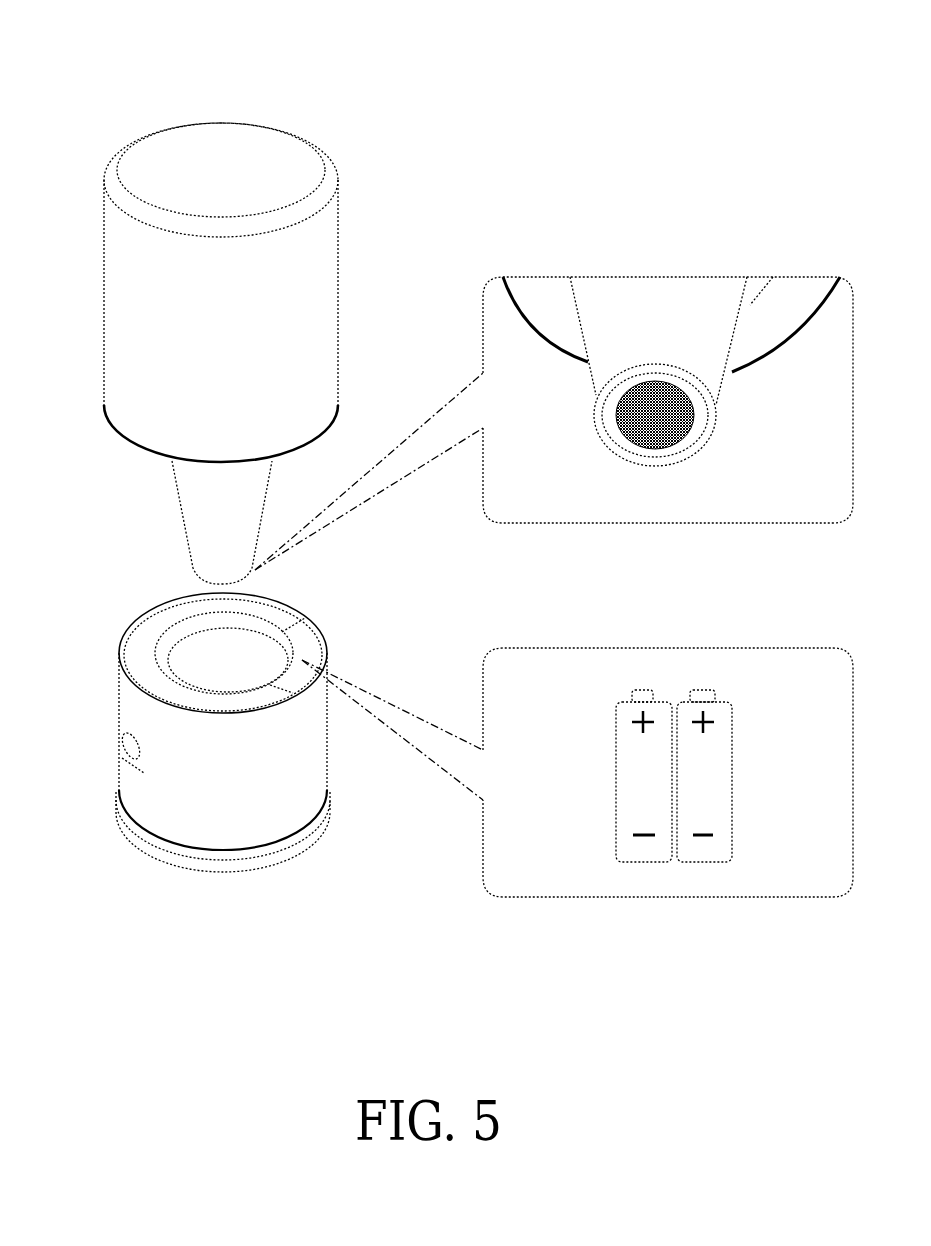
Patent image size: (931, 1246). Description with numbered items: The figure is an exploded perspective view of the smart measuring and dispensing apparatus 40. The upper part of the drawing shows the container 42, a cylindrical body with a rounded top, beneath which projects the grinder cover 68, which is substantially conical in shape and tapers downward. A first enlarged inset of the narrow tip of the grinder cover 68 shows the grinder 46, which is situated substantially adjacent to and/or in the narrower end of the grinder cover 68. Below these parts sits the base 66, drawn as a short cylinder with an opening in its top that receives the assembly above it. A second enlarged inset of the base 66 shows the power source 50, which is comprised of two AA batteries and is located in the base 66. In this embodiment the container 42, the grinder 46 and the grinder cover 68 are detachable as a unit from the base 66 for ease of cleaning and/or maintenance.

The apparatus 40 is at (100, 35).
The container 42 is at (158, 290).
The grinder cover 68 is at (197, 516).
The grinder 46 is at (672, 438).
The base 66 is at (292, 807).
The power source 50 is at (685, 847).